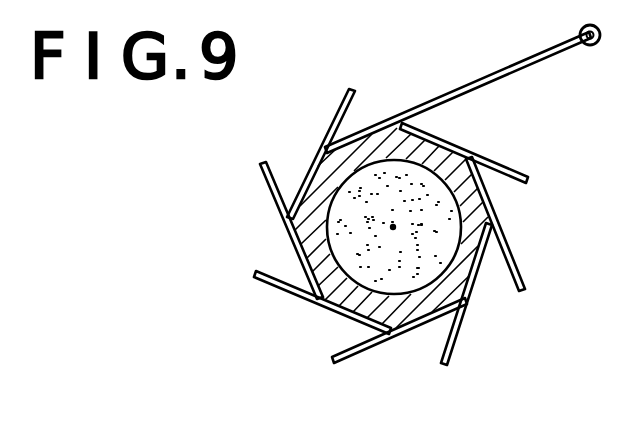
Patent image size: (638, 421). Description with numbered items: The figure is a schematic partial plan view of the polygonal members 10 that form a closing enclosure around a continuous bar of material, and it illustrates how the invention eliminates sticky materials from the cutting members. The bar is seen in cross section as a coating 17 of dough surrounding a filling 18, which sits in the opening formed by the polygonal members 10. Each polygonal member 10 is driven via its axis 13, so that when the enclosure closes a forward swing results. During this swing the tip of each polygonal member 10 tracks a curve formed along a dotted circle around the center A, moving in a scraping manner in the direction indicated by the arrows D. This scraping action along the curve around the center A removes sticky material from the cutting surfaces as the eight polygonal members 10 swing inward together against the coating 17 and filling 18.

The polygonal member 10 is at (336, 117).
The axis 13 is at (579, 31).
The coating 17 is at (359, 304).
The filling 18 is at (393, 282).
The center A is at (338, 178).
The arrows indicating direction D is at (353, 118).